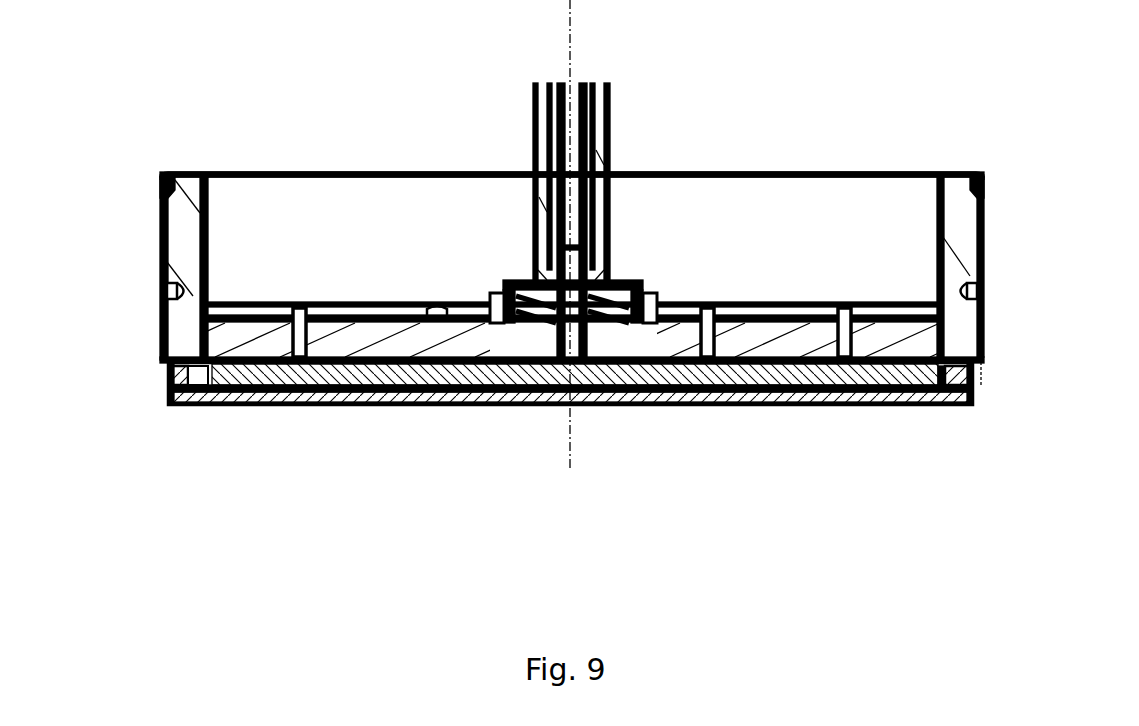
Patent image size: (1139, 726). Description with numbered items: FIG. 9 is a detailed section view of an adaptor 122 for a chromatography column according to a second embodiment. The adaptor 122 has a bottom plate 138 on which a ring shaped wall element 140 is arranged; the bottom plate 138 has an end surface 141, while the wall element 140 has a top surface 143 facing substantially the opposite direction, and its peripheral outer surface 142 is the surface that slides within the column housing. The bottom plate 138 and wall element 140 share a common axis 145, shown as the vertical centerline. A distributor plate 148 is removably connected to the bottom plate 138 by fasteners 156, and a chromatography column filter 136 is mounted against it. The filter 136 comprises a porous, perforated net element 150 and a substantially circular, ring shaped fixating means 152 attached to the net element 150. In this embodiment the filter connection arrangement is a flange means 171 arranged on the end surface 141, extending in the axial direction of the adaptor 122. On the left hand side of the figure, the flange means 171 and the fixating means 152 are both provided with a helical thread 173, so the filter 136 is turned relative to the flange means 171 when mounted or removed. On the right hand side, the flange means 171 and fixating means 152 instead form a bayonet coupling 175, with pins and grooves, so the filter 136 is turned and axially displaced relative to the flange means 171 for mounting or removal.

The adaptor 122 is at (985, 208).
The chromatography column filter 136 is at (300, 405).
The bottom plate 138 is at (778, 320).
The ring shaped wall element 140 is at (946, 185).
The end surface 141 is at (760, 392).
The peripheral outer surface 142 is at (985, 250).
The top surface 143 is at (957, 172).
The common axis 145 is at (597, 420).
The distributor plate 148 is at (518, 405).
The net element 150 is at (695, 397).
The fixating means 152 is at (168, 368).
The fasteners 156 is at (297, 302).
The flange means 171 is at (195, 405).
The helical thread 173 is at (170, 382).
The bayonet coupling 175 is at (975, 387).